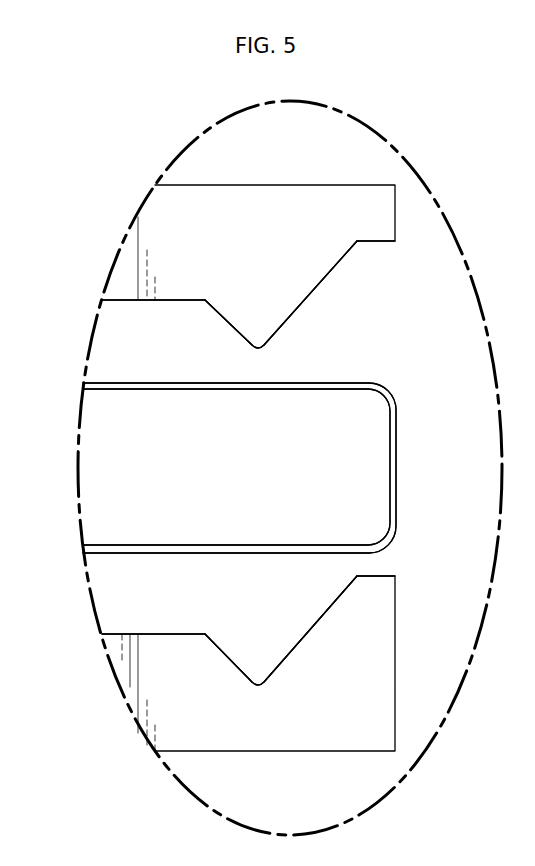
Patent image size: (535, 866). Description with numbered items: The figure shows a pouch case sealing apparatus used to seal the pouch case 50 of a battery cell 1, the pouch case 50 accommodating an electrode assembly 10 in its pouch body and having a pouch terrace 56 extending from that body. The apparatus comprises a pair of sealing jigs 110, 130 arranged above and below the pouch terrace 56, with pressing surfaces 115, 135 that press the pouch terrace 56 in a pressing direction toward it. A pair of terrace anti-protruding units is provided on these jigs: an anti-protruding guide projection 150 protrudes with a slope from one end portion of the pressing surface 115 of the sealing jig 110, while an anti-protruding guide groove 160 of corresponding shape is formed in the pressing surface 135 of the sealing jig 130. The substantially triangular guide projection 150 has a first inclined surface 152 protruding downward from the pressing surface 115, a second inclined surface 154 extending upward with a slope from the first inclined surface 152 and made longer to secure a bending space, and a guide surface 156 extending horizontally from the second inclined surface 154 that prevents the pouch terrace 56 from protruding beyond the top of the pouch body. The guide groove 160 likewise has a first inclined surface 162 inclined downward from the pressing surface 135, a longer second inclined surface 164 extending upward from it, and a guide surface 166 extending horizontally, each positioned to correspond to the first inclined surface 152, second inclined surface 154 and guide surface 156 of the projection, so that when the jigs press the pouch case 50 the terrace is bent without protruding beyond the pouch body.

The battery cell 1 is at (70, 462).
The electrode assembly 10 is at (368, 453).
The pouch case 50 is at (412, 420).
The pouch terrace 56 is at (398, 488).
The sealing jig 110 is at (213, 193).
The pressing surface 115 is at (160, 302).
The sealing jig 130 is at (212, 740).
The pressing surface 135 is at (163, 633).
The anti-protruding guide projection 150 is at (335, 300).
The first inclined surface 152 is at (231, 322).
The second inclined surface 154 is at (288, 323).
The guide surface 156 is at (380, 244).
The anti-protruding guide groove 160 is at (258, 610).
The first inclined surface 162 is at (231, 658).
The second inclined surface 164 is at (325, 611).
The guide surface 166 is at (380, 575).